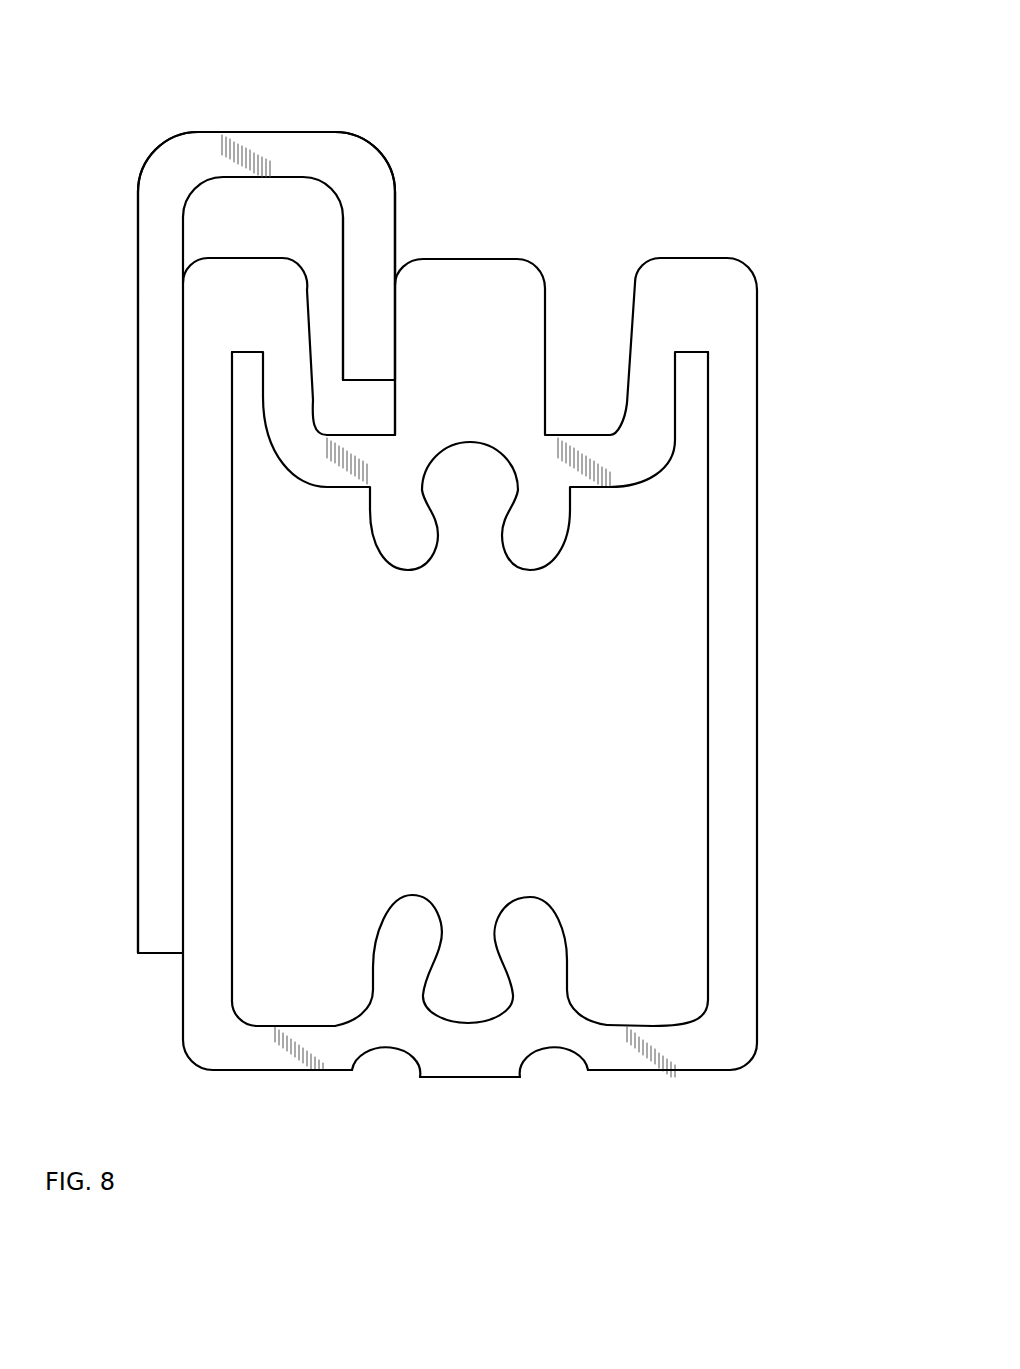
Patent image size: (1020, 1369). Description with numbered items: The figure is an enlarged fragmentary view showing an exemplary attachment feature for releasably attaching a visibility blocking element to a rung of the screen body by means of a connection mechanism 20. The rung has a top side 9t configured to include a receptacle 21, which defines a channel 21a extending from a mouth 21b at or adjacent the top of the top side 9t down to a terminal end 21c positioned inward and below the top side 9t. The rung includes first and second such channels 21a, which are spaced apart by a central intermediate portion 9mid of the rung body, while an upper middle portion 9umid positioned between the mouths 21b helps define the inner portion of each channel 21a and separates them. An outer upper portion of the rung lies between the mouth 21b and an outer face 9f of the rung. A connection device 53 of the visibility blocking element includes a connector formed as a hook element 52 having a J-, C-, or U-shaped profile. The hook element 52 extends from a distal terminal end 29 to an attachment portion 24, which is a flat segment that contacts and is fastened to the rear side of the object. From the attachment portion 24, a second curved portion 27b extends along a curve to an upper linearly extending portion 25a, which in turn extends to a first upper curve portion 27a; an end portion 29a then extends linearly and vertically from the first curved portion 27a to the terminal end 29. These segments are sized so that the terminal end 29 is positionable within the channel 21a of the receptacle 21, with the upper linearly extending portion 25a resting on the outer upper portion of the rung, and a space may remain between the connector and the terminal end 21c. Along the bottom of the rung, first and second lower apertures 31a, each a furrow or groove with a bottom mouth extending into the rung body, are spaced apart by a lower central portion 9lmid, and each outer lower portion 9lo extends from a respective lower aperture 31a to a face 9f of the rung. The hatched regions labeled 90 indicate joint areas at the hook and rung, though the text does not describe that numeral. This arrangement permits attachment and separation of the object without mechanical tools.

The hook element 52 is at (225, 88).
The connection mechanism 20 is at (273, 110).
The upper linearly extending portion 25a is at (212, 137).
The first upper curve portion 27a is at (347, 148).
The second curved portion 27b is at (156, 175).
The attachment portion 24 is at (138, 578).
The connection device 53 is at (122, 315).
The end portion 29a is at (353, 228).
The terminal end 29 is at (370, 357).
The weld joint 90 is at (200, 260).
The upper middle portion 9umid is at (413, 262).
The receptacle 21 is at (583, 264).
The mouth 21b is at (643, 268).
The top side 9t is at (766, 390).
The central intermediate portion 9mid is at (495, 375).
The terminal end 21c is at (317, 430).
The channel 21a is at (590, 408).
The outer face 9f is at (757, 578).
The lower central portion 9lmid is at (457, 970).
The outer lower portion 9lo is at (243, 1070).
The lower aperture 31a is at (407, 1058).